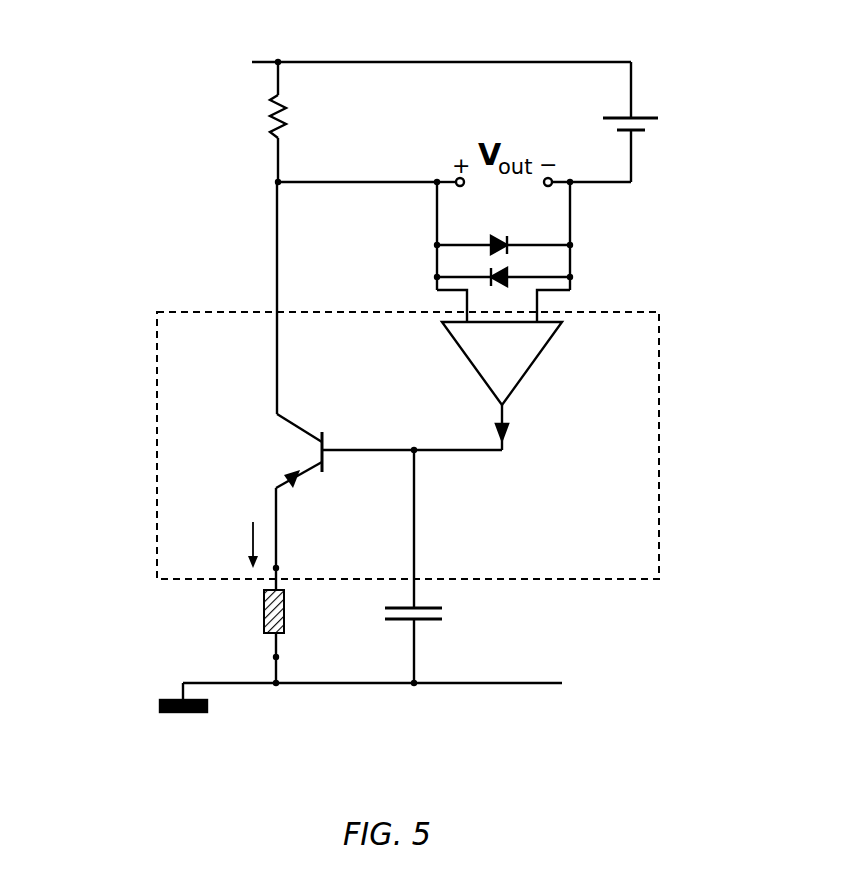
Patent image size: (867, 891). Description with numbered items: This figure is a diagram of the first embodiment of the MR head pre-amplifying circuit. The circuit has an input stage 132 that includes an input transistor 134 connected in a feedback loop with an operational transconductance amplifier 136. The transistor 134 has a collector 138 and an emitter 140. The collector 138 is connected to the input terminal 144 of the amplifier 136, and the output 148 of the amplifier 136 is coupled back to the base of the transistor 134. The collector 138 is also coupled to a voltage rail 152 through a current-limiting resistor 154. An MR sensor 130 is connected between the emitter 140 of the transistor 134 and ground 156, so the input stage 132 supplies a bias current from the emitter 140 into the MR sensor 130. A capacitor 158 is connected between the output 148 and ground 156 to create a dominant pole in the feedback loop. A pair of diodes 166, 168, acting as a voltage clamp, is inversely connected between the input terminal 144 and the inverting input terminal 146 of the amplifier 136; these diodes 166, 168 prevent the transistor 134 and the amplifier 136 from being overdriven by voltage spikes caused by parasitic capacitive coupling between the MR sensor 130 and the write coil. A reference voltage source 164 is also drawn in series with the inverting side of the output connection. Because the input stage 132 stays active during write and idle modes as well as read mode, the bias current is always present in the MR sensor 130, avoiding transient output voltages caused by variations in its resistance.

The MR sensor 130 is at (263, 630).
The input stage 132 is at (660, 385).
The input transistor 134 is at (290, 459).
The operational transconductance amplifier 136 is at (458, 350).
The collector 138 is at (275, 351).
The emitter 140 is at (276, 521).
The input terminal 144 is at (458, 308).
The inverting input terminal 146 is at (540, 307).
The output 148 is at (500, 412).
The voltage rail 152 is at (440, 62).
The current-limiting resistor 154 is at (268, 137).
The ground 156 is at (160, 708).
The capacitor 158 is at (432, 621).
The reference voltage source 164 is at (646, 133).
The diode 166 is at (494, 243).
The diode 168 is at (506, 272).